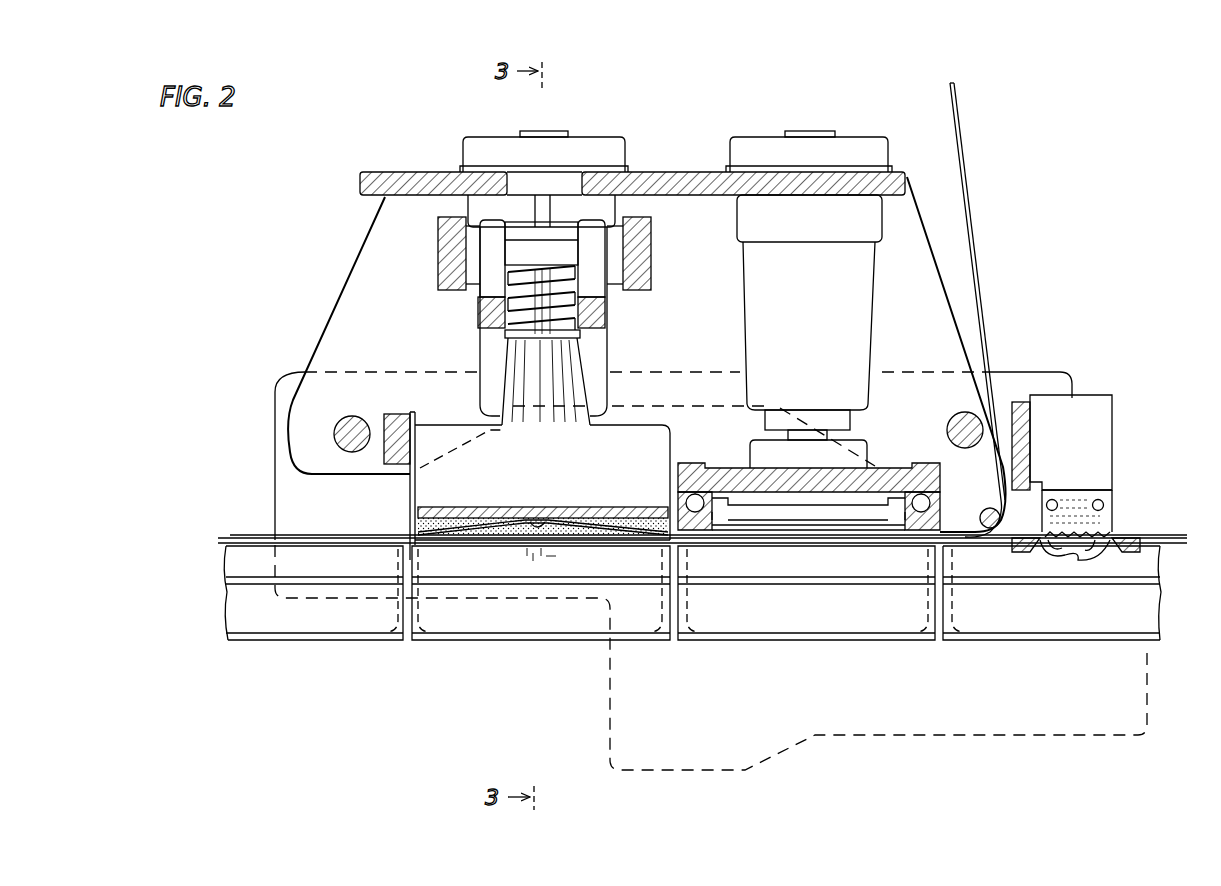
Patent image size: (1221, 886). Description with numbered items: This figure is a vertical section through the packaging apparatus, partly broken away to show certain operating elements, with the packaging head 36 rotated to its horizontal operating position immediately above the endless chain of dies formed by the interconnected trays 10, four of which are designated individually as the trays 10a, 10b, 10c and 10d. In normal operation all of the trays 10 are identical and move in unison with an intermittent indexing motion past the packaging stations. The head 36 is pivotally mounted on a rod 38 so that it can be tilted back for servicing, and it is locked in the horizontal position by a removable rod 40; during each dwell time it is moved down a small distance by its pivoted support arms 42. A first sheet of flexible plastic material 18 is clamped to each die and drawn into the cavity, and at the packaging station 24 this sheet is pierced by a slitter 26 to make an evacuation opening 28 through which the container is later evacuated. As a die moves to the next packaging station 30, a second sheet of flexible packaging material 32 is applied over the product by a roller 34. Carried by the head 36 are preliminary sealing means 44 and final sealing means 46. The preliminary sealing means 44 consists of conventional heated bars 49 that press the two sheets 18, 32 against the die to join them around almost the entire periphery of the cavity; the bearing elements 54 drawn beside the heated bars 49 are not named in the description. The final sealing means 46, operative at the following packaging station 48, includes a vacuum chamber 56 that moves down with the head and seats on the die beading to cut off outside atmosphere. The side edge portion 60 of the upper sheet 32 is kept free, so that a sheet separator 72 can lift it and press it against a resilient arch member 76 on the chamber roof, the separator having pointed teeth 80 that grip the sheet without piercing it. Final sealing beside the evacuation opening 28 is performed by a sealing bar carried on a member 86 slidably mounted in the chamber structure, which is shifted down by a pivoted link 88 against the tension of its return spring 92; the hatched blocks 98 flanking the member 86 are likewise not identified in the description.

The trays 10 is at (648, 611).
The tray 10a is at (268, 620).
The tray 10b is at (468, 620).
The tray 10c is at (724, 610).
The tray 10d is at (996, 612).
The first sheet of flexible plastic material 18 is at (226, 538).
The packaging station 24 is at (1067, 652).
The slitter 26 is at (1072, 502).
The evacuation opening 28 is at (1114, 532).
The packaging station 30 is at (806, 652).
The second sheet of flexible packaging material 32 is at (963, 118).
The roller 34 is at (982, 517).
The packaging head 36 is at (333, 256).
The rod 38 is at (346, 430).
The removable rod 40 is at (960, 426).
The pivoted support arms 42 is at (284, 492).
The preliminary sealing means 44 is at (725, 466).
The final sealing means 46 is at (626, 425).
The packaging station 48 is at (528, 662).
The heated bars 49 is at (690, 532).
The bearing race 54 is at (712, 530).
The vacuum chamber 56 is at (450, 434).
The side edge portion 60 is at (588, 537).
The sheet separator 72 is at (530, 538).
The resilient arch member 76 is at (620, 520).
The pointed teeth 80 is at (547, 537).
The member 86 is at (520, 300).
The pivoted link 88 is at (488, 314).
The return spring 92 is at (542, 278).
The spacer blocks 98 is at (446, 268).